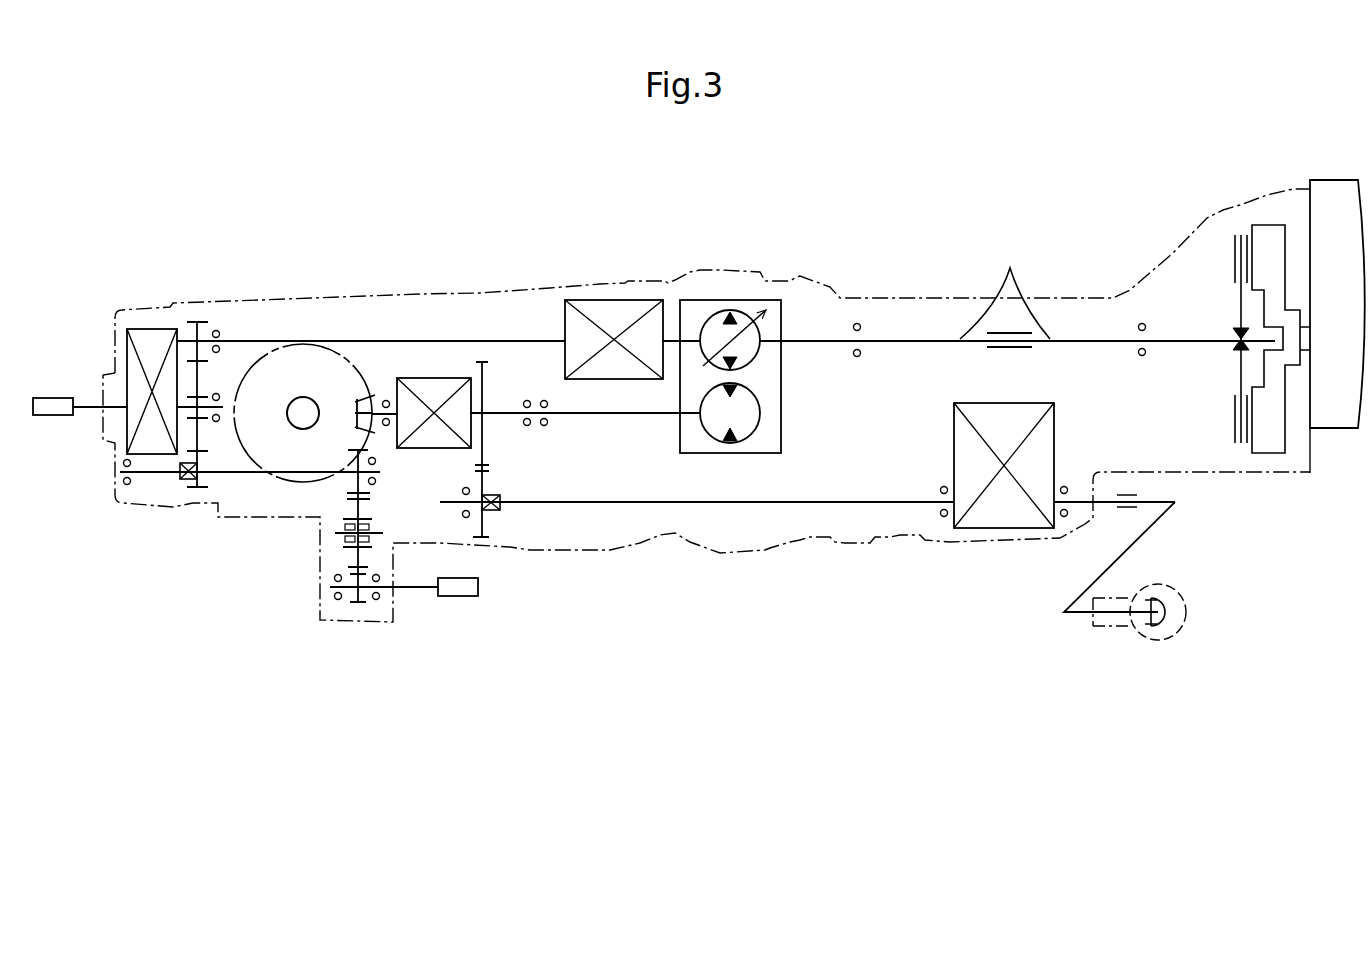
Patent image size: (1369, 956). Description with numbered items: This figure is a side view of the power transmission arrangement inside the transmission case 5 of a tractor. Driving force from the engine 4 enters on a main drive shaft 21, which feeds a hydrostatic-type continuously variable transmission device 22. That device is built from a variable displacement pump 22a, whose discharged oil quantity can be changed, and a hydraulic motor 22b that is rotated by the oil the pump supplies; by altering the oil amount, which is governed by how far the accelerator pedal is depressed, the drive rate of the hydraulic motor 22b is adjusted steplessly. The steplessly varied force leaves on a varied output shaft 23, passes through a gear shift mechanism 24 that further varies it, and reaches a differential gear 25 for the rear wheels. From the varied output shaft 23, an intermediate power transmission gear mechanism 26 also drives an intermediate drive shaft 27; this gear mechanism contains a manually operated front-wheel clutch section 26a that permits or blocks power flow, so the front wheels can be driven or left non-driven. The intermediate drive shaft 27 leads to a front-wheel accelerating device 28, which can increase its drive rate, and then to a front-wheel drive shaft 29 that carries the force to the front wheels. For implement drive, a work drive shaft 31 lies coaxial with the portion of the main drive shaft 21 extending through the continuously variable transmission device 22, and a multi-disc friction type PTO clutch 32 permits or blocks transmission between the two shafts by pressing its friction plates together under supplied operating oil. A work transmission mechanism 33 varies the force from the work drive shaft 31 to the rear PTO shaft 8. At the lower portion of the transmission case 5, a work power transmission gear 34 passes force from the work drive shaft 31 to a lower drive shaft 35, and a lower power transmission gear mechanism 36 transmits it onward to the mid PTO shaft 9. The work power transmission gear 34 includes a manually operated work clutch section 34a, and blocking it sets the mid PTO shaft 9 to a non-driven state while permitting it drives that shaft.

The engine 4 is at (1336, 180).
The transmission case 5 is at (862, 298).
The rear PTO shaft 8 is at (52, 417).
The mid PTO shaft 9 is at (462, 596).
The main drive shaft 21 is at (1005, 294).
The hydrostatic-type continuously variable transmission device 22 is at (767, 341).
The variable displacement pump 22a is at (760, 357).
The hydraulic motor 22b is at (760, 415).
The varied output shaft 23 is at (637, 413).
The gear shift mechanism 24 is at (432, 449).
The differential gear 25 is at (351, 355).
The intermediate power transmission gear mechanism 26 is at (494, 473).
The front-wheel clutch section 26a is at (492, 510).
The intermediate drive shaft 27 is at (682, 502).
The front-wheel accelerating device 28 is at (1054, 437).
The front-wheel drive shaft 29 is at (1135, 543).
The work drive shaft 31 is at (438, 338).
The PTO clutch 32 is at (614, 300).
The work transmission mechanism 33 is at (125, 360).
The work power transmission gear 34 is at (198, 325).
The work clutch section 34a is at (180, 470).
The lower drive shaft 35 is at (260, 474).
The lower power transmission gear mechanism 36 is at (340, 555).